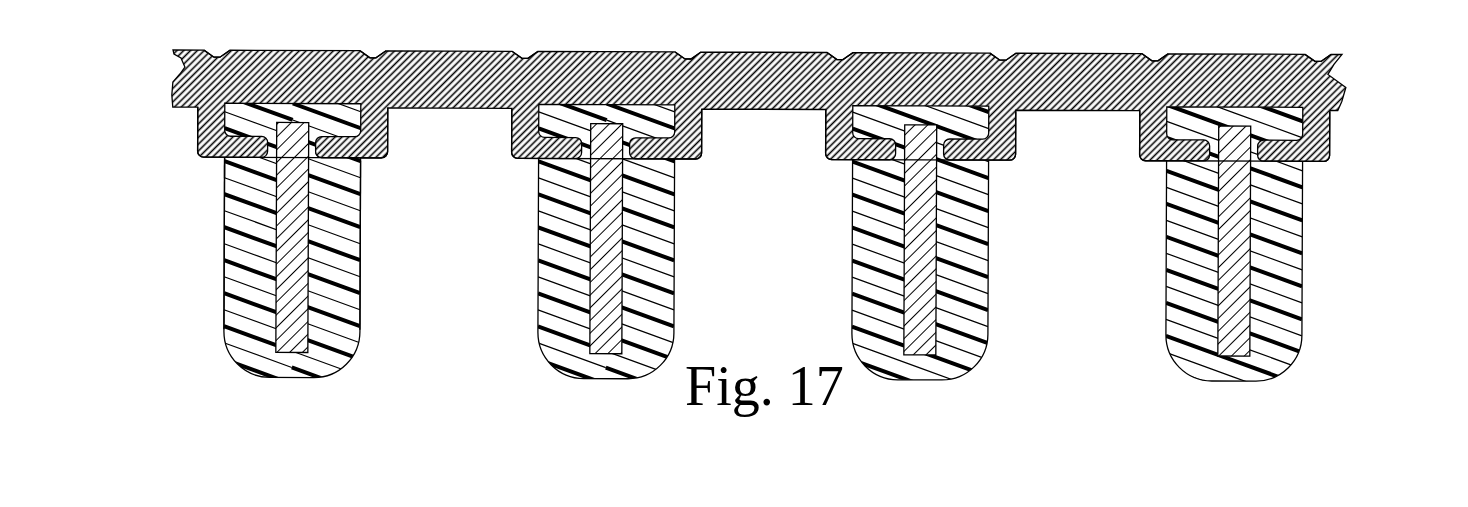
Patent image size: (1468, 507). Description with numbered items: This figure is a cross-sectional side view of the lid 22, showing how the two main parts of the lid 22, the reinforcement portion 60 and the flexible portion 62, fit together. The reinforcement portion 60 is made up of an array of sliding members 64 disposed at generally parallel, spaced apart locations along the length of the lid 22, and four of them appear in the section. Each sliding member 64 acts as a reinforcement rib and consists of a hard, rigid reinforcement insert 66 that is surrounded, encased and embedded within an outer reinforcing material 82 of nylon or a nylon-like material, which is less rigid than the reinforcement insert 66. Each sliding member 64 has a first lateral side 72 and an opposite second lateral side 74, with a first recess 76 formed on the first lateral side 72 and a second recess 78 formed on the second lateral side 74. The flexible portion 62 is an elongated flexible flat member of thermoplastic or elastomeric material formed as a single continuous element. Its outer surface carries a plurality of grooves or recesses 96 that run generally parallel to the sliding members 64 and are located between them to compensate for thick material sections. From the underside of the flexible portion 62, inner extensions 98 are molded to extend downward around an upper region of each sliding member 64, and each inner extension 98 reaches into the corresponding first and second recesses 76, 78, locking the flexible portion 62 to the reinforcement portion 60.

The lid 22 is at (789, 218).
The reinforcement portion 60 is at (772, 218).
The flexible portion 62 is at (786, 106).
The sliding member 64 is at (412, 358).
The reinforcement insert 66 is at (294, 331).
The first lateral side 72 is at (226, 250).
The second lateral side 74 is at (363, 254).
The first recess 76 is at (217, 158).
The second recess 78 is at (363, 159).
The outer reinforcing material 82 is at (337, 289).
The recesses 96 is at (217, 57).
The inner extensions 98 is at (202, 157).